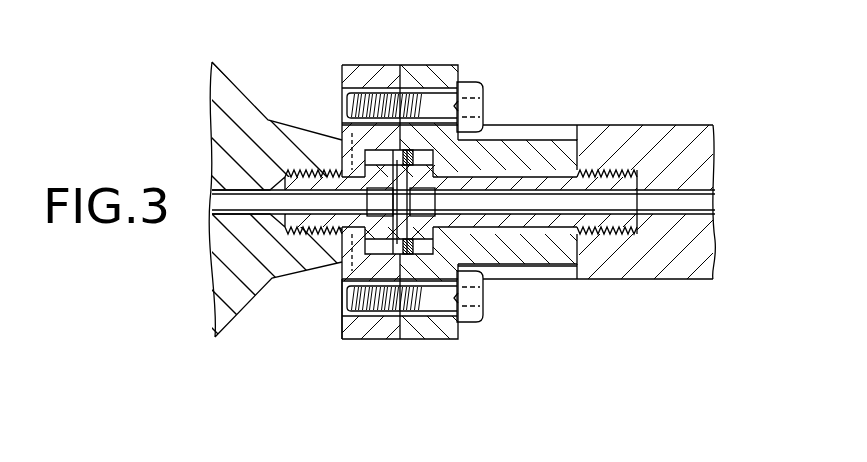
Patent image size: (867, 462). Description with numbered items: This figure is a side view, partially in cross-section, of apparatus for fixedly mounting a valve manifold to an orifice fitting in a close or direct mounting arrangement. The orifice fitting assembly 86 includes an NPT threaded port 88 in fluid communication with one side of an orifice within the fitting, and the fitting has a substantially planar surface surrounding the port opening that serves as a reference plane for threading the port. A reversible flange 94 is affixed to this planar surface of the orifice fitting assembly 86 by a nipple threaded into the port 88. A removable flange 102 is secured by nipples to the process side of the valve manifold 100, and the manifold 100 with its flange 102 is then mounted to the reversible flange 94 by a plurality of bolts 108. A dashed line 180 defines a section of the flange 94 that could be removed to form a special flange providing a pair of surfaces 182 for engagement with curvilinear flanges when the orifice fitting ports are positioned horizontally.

The orifice fitting assembly 86 is at (248, 95).
The NPT threaded port 88 is at (316, 170).
The reversible flange 94 is at (375, 340).
The valve manifold 100 is at (598, 125).
The flange 102 is at (507, 157).
The bolts 108 is at (462, 332).
The dashed line 180 is at (340, 258).
The surfaces 182 is at (340, 322).